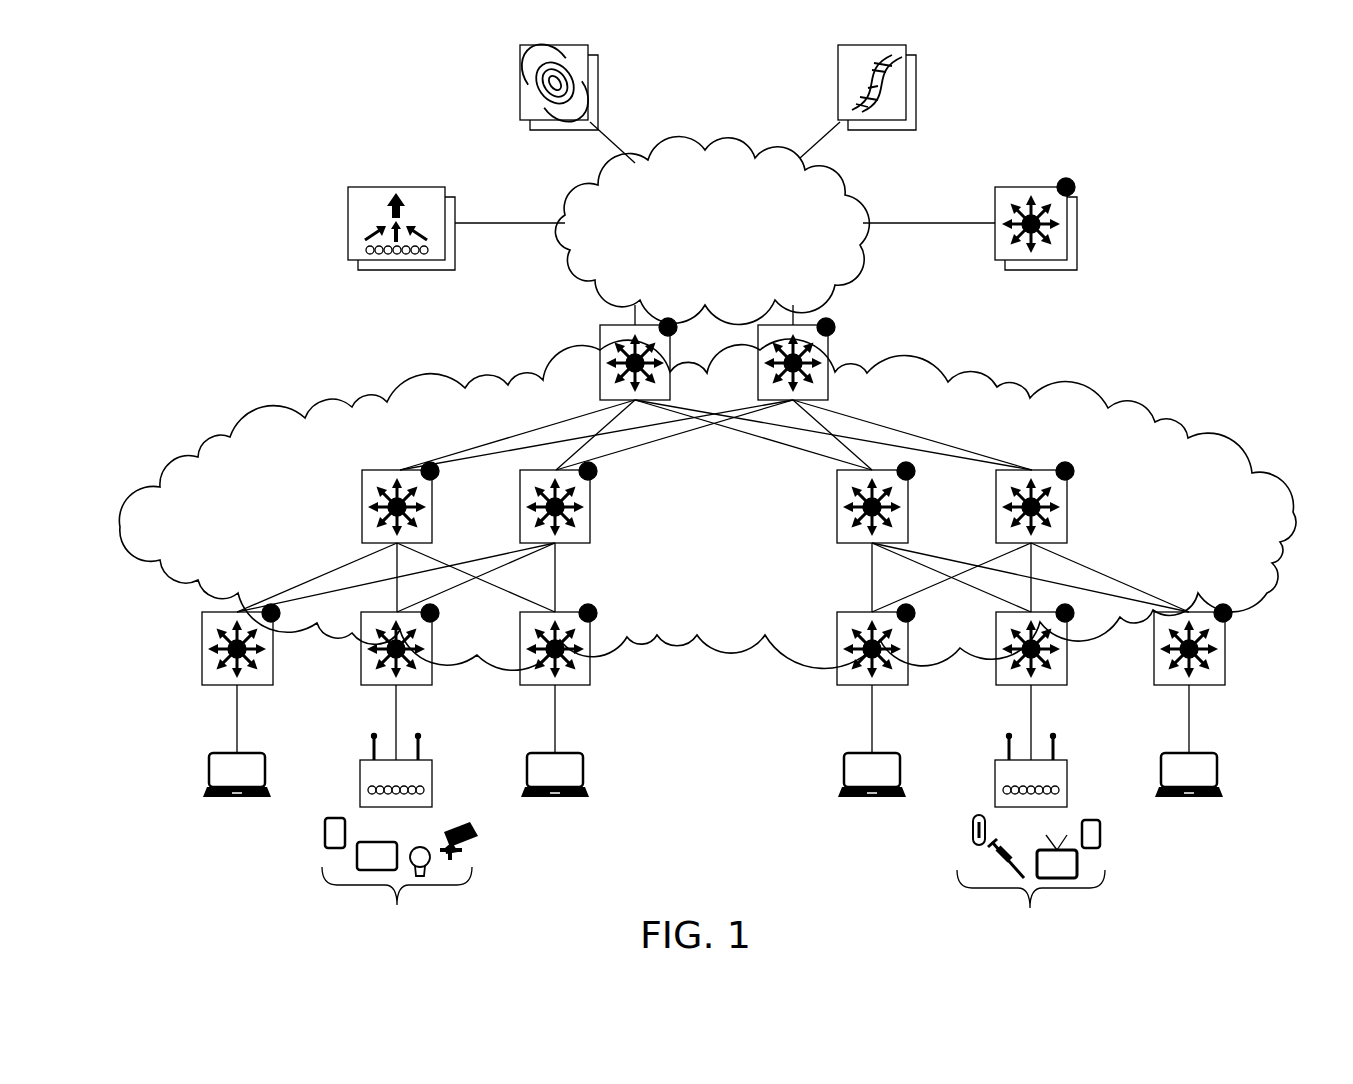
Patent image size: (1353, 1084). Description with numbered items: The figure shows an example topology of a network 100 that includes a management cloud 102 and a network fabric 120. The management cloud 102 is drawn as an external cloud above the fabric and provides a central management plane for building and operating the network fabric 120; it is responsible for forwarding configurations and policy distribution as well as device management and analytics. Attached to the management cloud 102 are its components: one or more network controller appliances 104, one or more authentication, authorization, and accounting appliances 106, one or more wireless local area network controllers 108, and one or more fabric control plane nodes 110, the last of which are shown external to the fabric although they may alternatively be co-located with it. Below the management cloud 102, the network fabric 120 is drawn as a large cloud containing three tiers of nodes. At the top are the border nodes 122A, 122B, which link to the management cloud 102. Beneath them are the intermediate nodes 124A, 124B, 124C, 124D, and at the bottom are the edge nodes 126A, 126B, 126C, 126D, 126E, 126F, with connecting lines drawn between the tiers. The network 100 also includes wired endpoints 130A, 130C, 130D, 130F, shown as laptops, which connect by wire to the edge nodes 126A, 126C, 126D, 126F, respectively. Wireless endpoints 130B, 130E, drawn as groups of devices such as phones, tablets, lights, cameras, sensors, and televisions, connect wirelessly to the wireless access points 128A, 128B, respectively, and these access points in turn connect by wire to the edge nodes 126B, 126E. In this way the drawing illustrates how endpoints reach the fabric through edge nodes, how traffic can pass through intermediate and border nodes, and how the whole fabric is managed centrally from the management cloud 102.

The network 100 is at (152, 105).
The management cloud 102 is at (699, 257).
The network controller appliance 104 is at (917, 128).
The authentication, authorization, and accounting (AAA) appliance 106 is at (527, 128).
The wireless local area network controller (WLC) 108 is at (358, 266).
The fabric control plane node 110 is at (1078, 266).
The network fabric 120 is at (700, 540).
The border node 122A is at (600, 326).
The border node 122B is at (828, 326).
The intermediate node 124A is at (362, 470).
The intermediate node 124B is at (590, 545).
The intermediate node 124C is at (837, 545).
The intermediate node 124D is at (1067, 470).
The edge node 126A is at (202, 687).
The edge node 126B is at (361, 687).
The edge node 126C is at (590, 687).
The edge node 126D is at (837, 687).
The edge node 126E is at (1067, 687).
The edge node 126F is at (1225, 687).
The wireless access point 128A is at (432, 760).
The wireless access point 128B is at (997, 760).
The wired endpoint 130A is at (237, 800).
The wireless endpoint 130B is at (400, 878).
The wired endpoint 130C is at (580, 800).
The wired endpoint 130D is at (845, 800).
The wireless endpoint 130E is at (1031, 876).
The wired endpoint 130F is at (1189, 800).